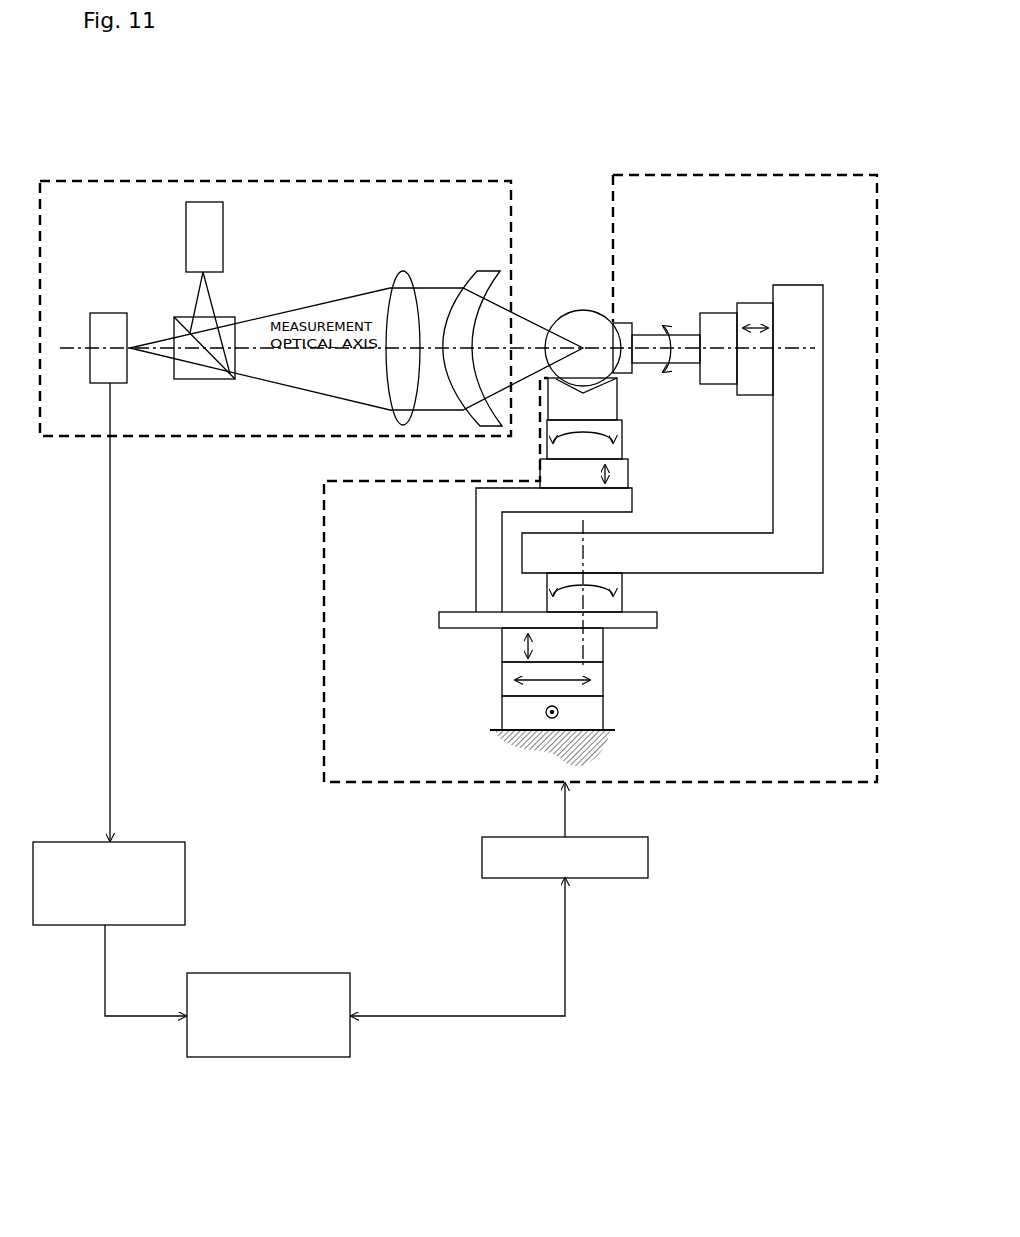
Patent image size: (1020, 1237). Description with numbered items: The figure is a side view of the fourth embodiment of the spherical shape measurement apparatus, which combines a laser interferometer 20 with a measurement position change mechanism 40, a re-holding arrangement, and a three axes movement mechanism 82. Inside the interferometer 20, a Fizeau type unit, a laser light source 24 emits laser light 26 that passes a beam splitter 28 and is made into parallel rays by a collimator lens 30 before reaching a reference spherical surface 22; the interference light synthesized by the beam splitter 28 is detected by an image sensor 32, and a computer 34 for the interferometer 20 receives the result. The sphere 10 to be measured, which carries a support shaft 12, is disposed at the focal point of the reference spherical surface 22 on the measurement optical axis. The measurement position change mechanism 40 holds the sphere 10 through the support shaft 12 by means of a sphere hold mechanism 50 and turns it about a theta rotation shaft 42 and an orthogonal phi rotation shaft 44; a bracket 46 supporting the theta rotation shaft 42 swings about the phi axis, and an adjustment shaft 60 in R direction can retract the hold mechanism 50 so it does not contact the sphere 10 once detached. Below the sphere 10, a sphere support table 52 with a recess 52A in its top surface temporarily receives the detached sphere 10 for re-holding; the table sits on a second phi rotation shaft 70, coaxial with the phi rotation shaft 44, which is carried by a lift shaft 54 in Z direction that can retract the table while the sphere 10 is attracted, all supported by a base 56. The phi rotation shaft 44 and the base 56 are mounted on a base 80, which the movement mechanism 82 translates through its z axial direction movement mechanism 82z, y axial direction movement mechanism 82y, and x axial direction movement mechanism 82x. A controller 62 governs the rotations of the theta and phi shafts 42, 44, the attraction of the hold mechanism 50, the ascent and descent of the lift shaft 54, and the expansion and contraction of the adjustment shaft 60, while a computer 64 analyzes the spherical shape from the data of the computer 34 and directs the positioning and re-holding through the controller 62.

The sphere 10 is at (575, 316).
The support shaft 12 is at (650, 333).
The laser interferometer 20 is at (122, 181).
The reference spherical surface 22 is at (500, 271).
The laser light source 24 is at (223, 237).
The laser light 26 is at (275, 318).
The beam splitter 28 is at (200, 379).
The collimator lens 30 is at (403, 271).
The image sensor 32 is at (90, 335).
The computer for the laser interferometer 34 is at (150, 842).
The measurement position change mechanism 40 is at (668, 80).
The θ rotation shaft 42 is at (713, 330).
The φ rotation shaft 44 is at (622, 588).
The bracket 46 is at (823, 520).
The sphere hold mechanism 50 is at (622, 322).
The sphere support table 52 is at (622, 396).
The recess 52A is at (612, 390).
The lift shaft in Z direction 54 is at (630, 476).
The base 56 is at (476, 548).
The adjustment shaft in R direction 60 is at (752, 304).
The controller 62 is at (590, 837).
The computer for analyzing a spherical shape 64 is at (310, 973).
The φ2 rotation shaft 70 is at (626, 452).
The base 80 is at (439, 618).
The three axes movement mechanism 82 is at (499, 679).
The x axial direction movement mechanism 82x is at (518, 713).
The y axial direction movement mechanism 82y is at (502, 672).
The z axial direction movement mechanism 82z is at (502, 642).